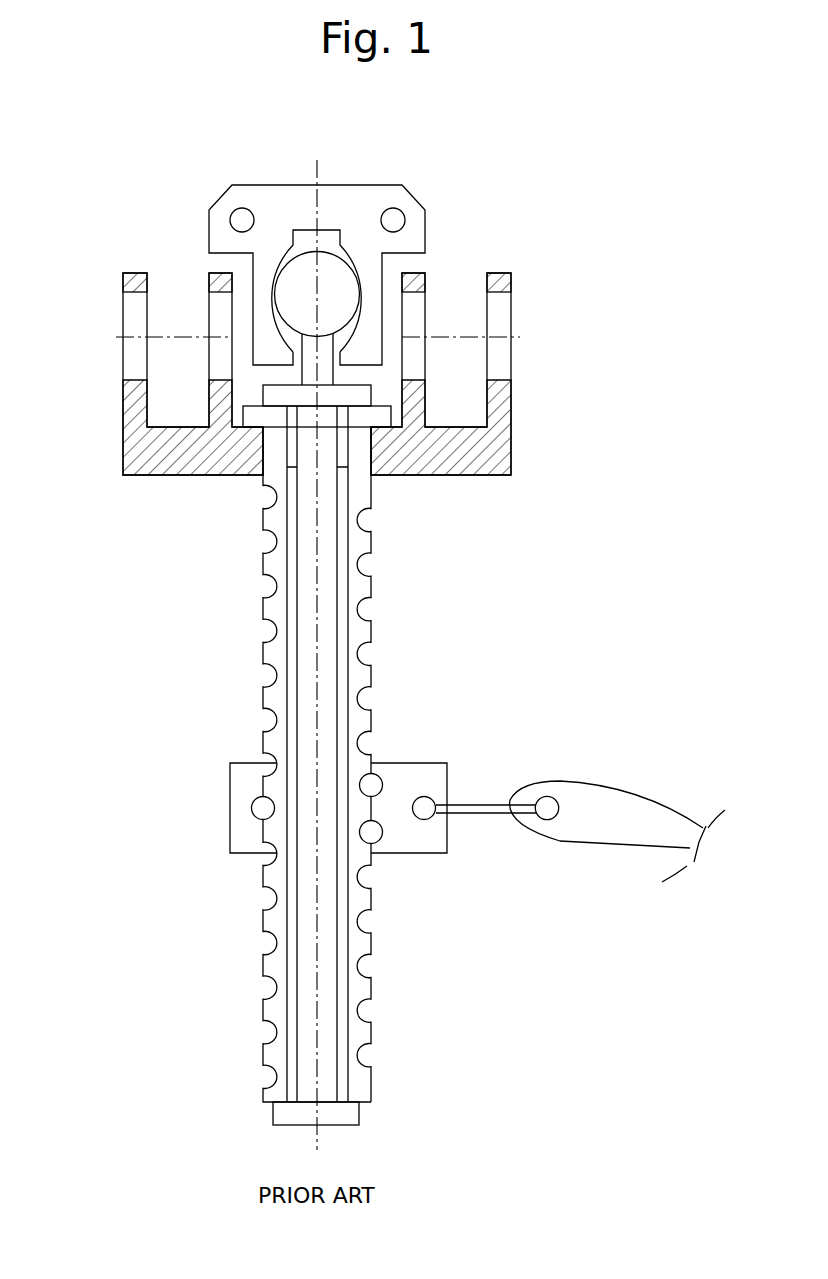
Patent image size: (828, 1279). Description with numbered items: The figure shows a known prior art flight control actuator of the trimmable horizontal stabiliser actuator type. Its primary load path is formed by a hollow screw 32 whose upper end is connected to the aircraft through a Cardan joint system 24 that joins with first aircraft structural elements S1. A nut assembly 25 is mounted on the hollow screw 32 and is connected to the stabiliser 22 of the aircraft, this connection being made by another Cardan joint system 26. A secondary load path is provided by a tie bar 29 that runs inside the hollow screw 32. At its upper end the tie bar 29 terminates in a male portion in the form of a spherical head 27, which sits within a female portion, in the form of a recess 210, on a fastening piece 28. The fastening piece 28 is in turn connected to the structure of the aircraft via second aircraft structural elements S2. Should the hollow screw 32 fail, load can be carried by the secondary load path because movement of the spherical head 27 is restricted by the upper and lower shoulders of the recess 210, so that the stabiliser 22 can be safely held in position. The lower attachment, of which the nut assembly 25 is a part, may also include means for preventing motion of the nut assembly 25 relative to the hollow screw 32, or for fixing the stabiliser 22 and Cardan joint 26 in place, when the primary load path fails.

The stabiliser 22 is at (556, 779).
The Cardan joint system 24 is at (123, 413).
The nut assembly 25 is at (420, 763).
The Cardan joint system 26 is at (491, 804).
The spherical head 27 is at (290, 290).
The fastening piece 28 is at (383, 185).
The tie bar 29 is at (302, 647).
The hollow screw 32 is at (360, 651).
The recess 210 is at (291, 250).
The first aircraft structural elements S1 is at (172, 333).
The second aircraft structural elements S2 is at (398, 213).